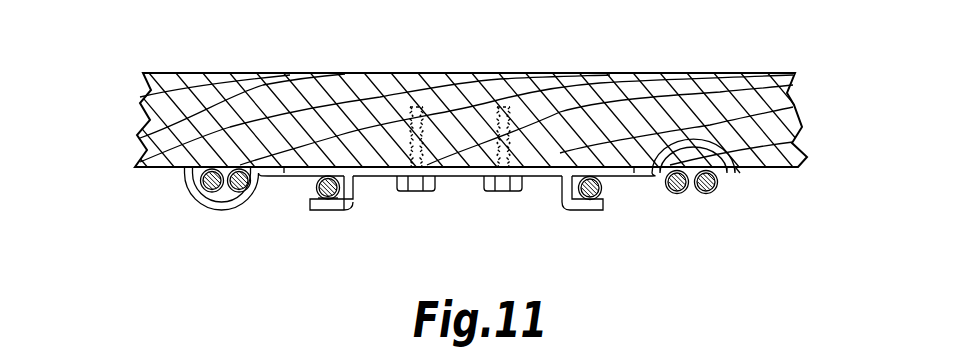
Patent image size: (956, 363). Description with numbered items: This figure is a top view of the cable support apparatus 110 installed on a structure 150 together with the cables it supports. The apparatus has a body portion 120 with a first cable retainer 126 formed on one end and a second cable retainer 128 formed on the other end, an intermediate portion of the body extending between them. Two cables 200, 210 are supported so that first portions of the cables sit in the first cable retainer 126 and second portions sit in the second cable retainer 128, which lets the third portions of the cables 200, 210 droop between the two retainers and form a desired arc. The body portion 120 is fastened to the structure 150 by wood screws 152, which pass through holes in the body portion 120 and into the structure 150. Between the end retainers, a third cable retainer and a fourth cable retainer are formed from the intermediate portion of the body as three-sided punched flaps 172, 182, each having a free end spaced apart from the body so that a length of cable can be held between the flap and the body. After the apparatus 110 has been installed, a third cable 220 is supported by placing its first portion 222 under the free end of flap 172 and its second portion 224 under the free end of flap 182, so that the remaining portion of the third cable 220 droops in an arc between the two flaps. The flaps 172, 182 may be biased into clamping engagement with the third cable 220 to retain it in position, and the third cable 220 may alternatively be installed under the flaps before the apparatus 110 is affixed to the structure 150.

The cable support apparatus 110 is at (715, 208).
The body portion 120 is at (455, 183).
The first cable retainer 126 is at (185, 188).
The second cable retainer 128 is at (735, 189).
The structure 150 is at (565, 82).
The wood screws 152 is at (485, 108).
The flap 172 is at (320, 208).
The flap 182 is at (582, 211).
The cable 200 is at (206, 199).
The cable 210 is at (238, 199).
The third cable 220 is at (344, 203).
The first portion of the third cable 222 is at (313, 191).
The second portion of the third cable 224 is at (603, 190).